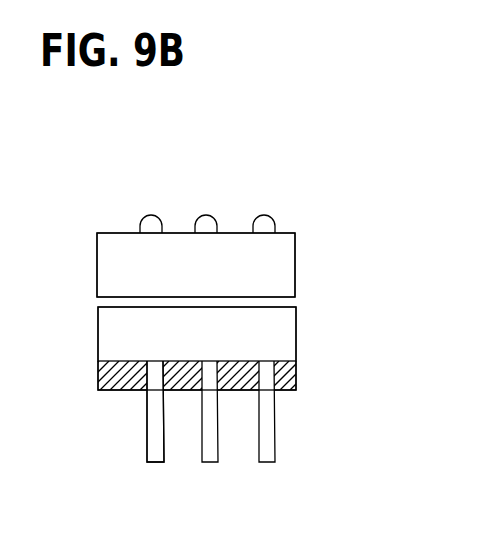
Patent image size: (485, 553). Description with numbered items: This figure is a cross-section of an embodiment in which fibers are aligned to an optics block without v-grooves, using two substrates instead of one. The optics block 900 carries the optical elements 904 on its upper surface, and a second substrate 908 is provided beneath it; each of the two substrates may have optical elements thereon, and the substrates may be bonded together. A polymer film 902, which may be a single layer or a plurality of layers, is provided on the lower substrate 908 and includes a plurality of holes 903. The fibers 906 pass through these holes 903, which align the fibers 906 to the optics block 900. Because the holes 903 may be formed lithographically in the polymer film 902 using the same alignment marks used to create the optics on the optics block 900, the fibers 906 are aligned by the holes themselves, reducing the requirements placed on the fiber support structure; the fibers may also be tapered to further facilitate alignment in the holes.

The optical elements 904 is at (97, 179).
The optics block 900 is at (297, 272).
The second substrate 908 is at (297, 340).
The polymer film 902 is at (297, 389).
The holes 903 is at (147, 394).
The fibers 906 is at (148, 440).